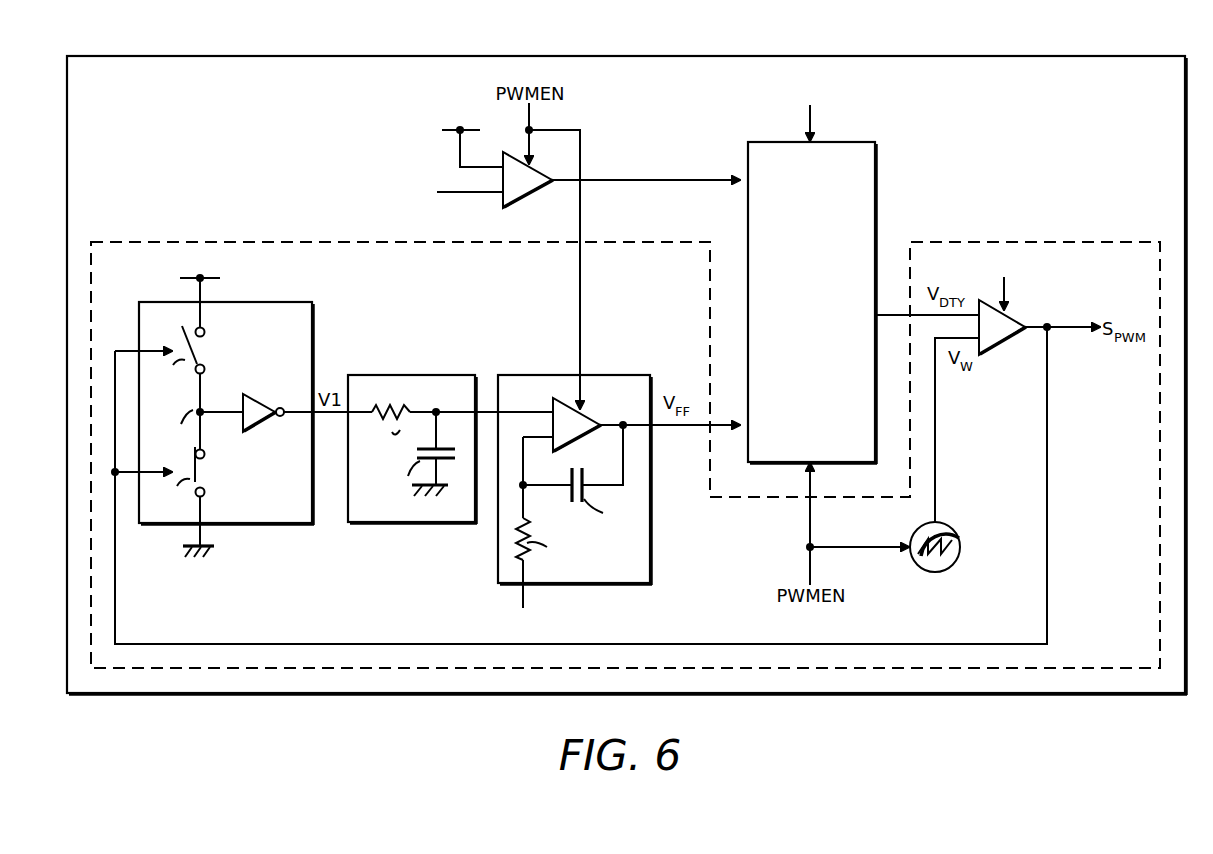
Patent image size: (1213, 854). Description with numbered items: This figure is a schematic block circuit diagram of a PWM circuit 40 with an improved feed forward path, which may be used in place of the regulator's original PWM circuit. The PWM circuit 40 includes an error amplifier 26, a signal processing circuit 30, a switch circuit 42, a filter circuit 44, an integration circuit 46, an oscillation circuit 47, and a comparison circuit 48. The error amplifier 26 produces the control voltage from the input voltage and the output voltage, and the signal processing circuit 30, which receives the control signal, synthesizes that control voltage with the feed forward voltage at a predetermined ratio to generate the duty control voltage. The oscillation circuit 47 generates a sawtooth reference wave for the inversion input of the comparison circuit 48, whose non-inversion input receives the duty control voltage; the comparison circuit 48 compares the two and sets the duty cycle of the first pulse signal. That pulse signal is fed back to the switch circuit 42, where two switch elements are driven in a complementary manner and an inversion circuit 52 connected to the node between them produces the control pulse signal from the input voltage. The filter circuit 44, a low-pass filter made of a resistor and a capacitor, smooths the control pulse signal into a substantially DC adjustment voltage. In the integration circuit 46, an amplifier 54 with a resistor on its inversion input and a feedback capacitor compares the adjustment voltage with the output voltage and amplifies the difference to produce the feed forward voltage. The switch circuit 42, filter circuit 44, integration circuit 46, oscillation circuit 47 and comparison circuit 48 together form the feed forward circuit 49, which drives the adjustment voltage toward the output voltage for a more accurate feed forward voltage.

The PWM circuit 40 is at (1082, 55).
The switch circuit 42 is at (283, 301).
The filter circuit 44 is at (445, 373).
The integration circuit 46 is at (619, 482).
The error amplifier 26 is at (526, 203).
The signal processing circuit 30 is at (824, 362).
The oscillation circuit 47 is at (953, 529).
The comparison circuit 48 is at (1013, 318).
The feed forward circuit 49 is at (1090, 241).
The inversion circuit 52 is at (257, 393).
The amplifier 54 is at (593, 414).